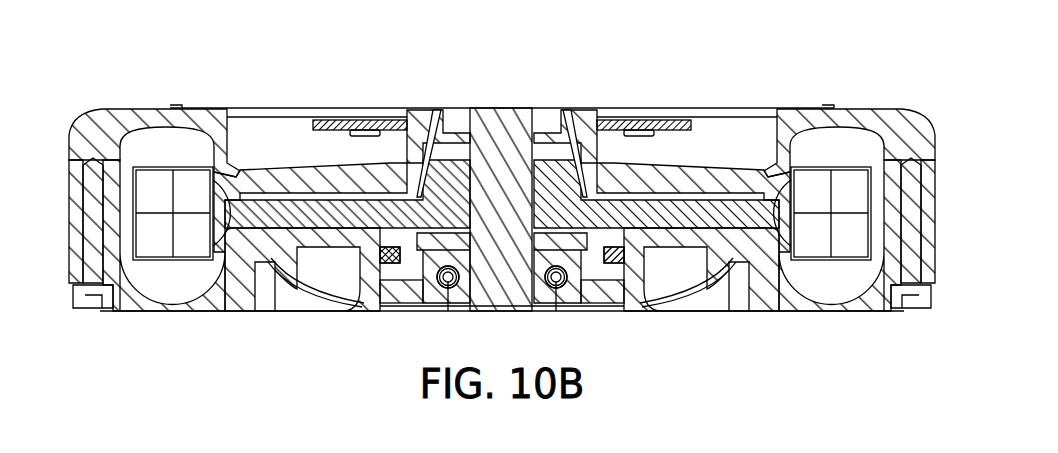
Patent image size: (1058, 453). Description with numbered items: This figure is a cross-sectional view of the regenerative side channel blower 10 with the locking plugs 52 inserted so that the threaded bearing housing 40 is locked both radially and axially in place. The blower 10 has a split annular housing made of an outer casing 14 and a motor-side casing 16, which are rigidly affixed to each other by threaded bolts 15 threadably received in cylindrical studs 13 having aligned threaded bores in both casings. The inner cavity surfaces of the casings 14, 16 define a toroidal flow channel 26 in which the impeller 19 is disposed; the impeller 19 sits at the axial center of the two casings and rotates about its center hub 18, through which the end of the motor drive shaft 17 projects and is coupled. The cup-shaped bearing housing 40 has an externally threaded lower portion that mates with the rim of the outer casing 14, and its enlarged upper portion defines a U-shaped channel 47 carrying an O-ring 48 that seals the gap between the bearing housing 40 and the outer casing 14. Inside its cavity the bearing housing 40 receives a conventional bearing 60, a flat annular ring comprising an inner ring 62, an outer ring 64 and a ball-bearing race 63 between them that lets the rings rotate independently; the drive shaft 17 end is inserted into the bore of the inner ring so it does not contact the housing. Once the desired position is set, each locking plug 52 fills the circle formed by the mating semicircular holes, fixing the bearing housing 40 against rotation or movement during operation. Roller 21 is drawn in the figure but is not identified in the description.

The regenerative side channel blower 10 is at (693, 321).
The cylindrical stud 13 is at (933, 275).
The outer casing 14 is at (853, 305).
The threaded bolt 15 is at (936, 262).
The motor-side casing 16 is at (833, 113).
The drive shaft 17 is at (503, 130).
The center hub 18 is at (568, 178).
The impeller 19 is at (777, 175).
The roller 21 is at (868, 262).
The toroidal flow channel 26 is at (833, 281).
The bearing housing 40 is at (413, 312).
The U-shaped channel 47 is at (436, 110).
The O-ring 48 is at (659, 172).
The locking plug 52 is at (633, 310).
The bearing 60 is at (537, 290).
The inner ring 62 is at (418, 303).
The ball-bearing race 63 is at (450, 284).
The outer ring 64 is at (463, 305).